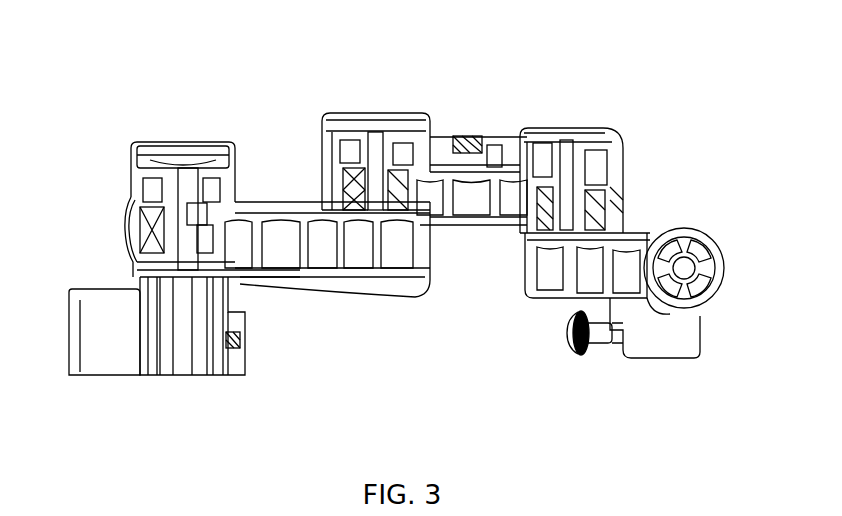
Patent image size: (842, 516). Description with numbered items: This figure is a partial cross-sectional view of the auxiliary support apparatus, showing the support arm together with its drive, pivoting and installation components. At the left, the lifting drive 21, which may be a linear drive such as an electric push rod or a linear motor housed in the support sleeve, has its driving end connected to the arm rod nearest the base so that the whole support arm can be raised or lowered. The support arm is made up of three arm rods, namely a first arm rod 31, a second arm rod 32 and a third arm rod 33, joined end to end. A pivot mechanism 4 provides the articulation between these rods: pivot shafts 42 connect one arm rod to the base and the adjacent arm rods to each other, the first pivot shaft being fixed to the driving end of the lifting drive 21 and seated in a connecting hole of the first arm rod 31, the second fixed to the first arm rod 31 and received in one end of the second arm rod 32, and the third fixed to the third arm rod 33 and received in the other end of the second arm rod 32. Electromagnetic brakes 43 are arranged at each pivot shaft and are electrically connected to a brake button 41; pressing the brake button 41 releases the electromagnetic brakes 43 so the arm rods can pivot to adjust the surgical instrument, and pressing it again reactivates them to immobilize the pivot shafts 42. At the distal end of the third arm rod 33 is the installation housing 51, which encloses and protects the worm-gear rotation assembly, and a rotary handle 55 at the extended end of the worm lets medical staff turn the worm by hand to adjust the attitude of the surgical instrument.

The pivot mechanism 4 is at (472, 116).
The lifting drive 21 is at (185, 335).
The first arm rod 31 is at (300, 263).
The second arm rod 32 is at (466, 205).
The third arm rod 33 is at (610, 257).
The brake button 41 is at (478, 146).
The pivot shafts 42 is at (567, 157).
The electromagnetic brakes 43 is at (543, 163).
The installation housing 51 is at (675, 343).
The rotary handle 55 is at (579, 355).